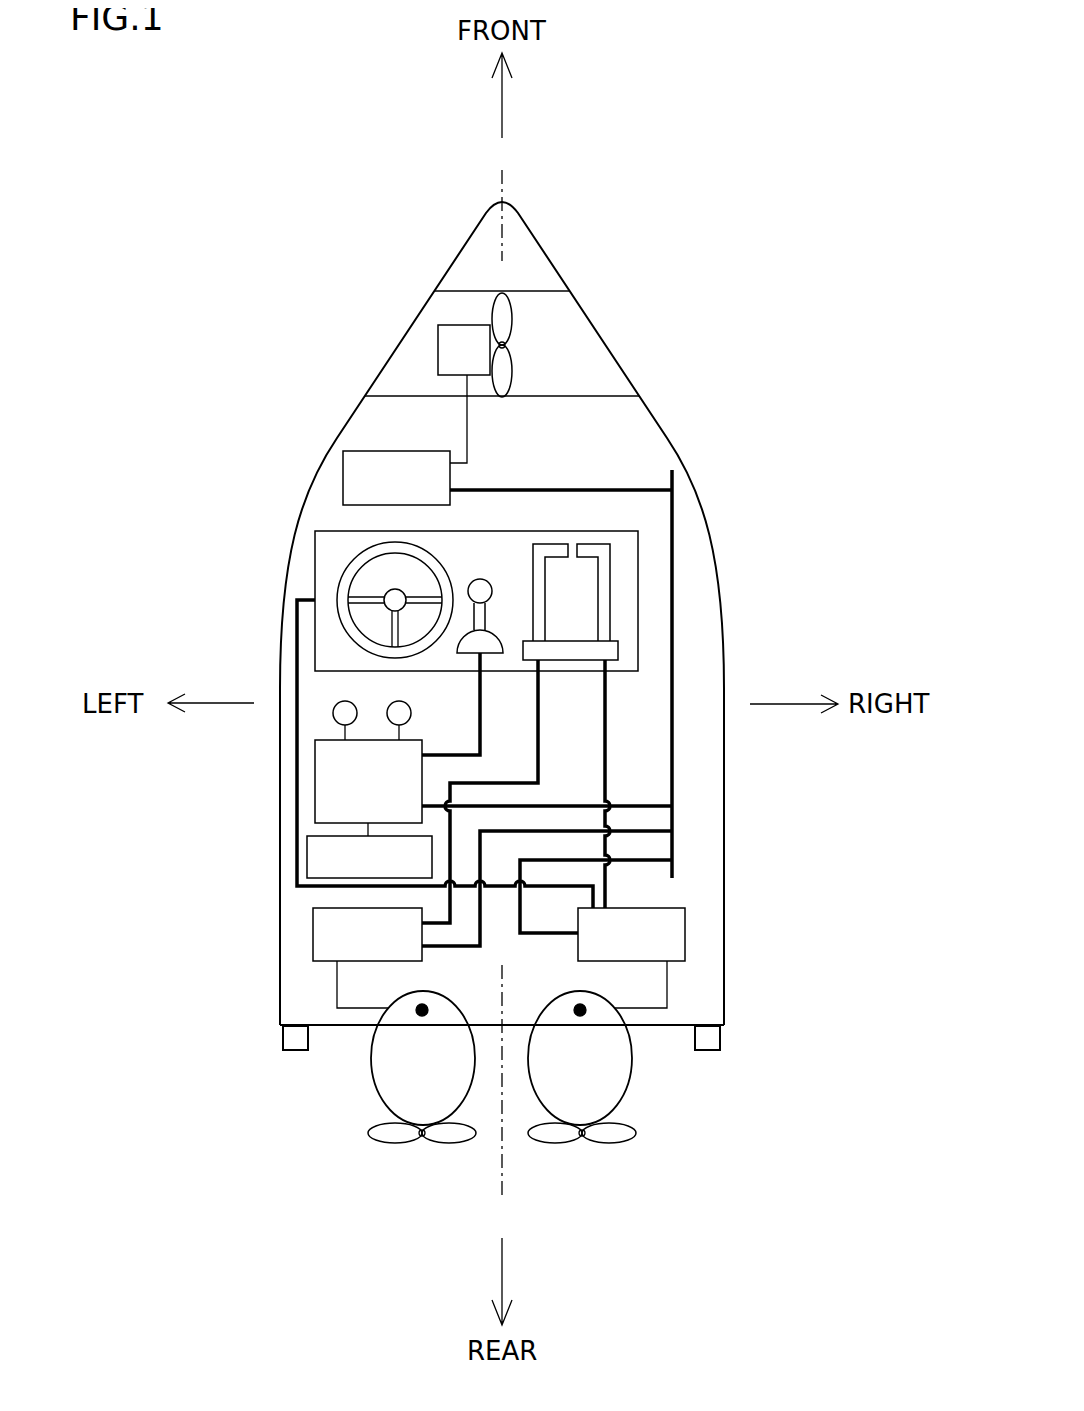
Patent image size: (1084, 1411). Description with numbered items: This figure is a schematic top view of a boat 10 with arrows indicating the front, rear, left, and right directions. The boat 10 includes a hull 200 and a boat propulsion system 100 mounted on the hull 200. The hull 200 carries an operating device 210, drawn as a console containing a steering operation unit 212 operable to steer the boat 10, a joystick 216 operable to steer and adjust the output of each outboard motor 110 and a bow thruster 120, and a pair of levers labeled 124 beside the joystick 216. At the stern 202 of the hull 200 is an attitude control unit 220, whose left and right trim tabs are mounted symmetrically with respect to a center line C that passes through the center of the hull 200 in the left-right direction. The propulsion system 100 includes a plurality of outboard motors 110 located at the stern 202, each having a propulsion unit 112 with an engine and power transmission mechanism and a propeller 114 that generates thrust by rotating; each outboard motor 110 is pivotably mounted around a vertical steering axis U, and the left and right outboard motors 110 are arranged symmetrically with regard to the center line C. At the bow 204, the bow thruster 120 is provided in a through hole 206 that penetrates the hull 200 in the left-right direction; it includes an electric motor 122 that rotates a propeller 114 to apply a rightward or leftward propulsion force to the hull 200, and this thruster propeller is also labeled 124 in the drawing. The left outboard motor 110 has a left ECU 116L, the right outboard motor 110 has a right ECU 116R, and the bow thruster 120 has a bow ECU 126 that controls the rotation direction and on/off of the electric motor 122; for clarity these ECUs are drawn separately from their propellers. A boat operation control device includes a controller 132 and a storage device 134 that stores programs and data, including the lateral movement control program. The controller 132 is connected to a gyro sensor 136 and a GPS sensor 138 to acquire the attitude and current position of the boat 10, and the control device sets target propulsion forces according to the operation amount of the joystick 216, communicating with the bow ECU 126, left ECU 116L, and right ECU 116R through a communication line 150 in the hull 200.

The boat 10 is at (662, 271).
The boat propulsion system 100 is at (691, 507).
The outboard motor 110 is at (505, 1076).
The propulsion unit 112 is at (400, 1065).
The propeller 114 is at (395, 1142).
The left ECU 116L is at (313, 920).
The right ECU 116R is at (685, 925).
The bow thruster 120 is at (569, 468).
The electric motor 122 is at (455, 337).
The thruster propeller / throttle lever 124 is at (508, 320).
The bow ECU 126 is at (342, 485).
The controller 132 is at (315, 775).
The storage device 134 is at (307, 860).
The gyro sensor 136 is at (333, 717).
The GPS sensor 138 is at (390, 702).
The communication line 150 is at (675, 787).
The hull 200 is at (734, 749).
The stern 202 is at (660, 1030).
The bow 204 is at (537, 243).
The through hole 206 is at (608, 393).
The operating device 210 is at (330, 572).
The steering operation unit 212 is at (345, 617).
The joystick 216 is at (483, 583).
The attitude control unit 220 is at (290, 1036).
The center line C is at (502, 183).
The steering axis U is at (575, 1010).